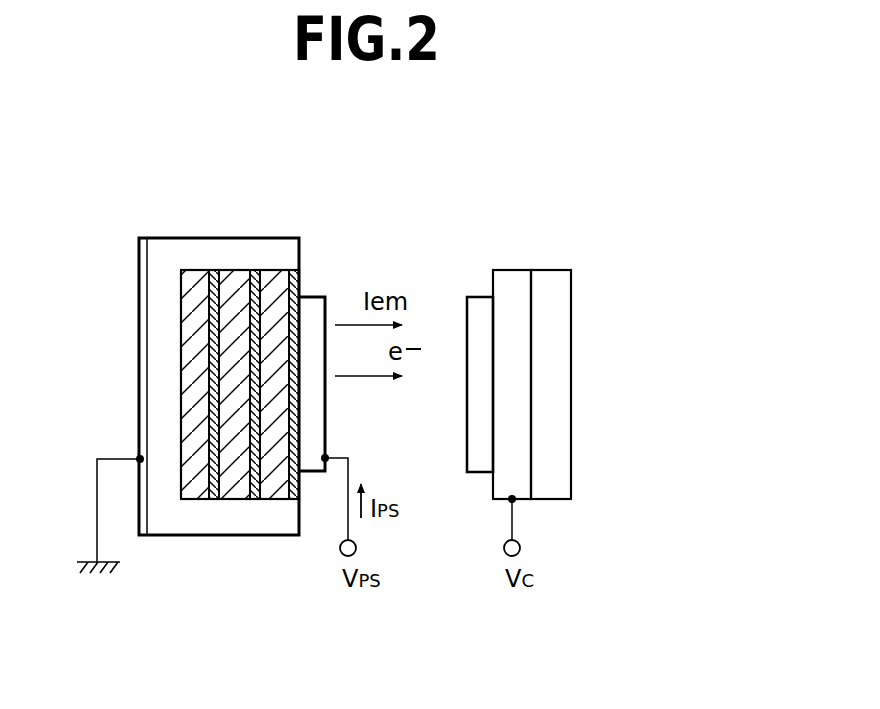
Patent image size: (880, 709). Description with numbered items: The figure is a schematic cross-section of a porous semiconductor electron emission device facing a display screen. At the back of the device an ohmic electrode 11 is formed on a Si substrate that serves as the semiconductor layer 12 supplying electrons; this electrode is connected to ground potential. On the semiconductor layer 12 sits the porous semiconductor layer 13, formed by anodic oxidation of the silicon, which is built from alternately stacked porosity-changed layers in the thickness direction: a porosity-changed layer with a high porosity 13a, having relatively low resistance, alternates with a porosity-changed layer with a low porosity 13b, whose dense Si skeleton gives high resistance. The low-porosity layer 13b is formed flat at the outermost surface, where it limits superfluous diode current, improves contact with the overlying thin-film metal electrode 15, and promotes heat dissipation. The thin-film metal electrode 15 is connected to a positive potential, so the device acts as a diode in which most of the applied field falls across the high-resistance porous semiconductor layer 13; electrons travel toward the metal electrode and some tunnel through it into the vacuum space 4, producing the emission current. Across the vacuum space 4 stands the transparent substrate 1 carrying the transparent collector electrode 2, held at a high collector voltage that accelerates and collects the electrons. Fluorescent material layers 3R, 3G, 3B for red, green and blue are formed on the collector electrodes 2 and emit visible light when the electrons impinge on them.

The transparent substrate 1 is at (550, 277).
The collector electrode 2 is at (510, 273).
The fluorescent material layer 3R is at (477, 298).
The fluorescent material layer 3G is at (477, 298).
The fluorescent material layer 3B is at (477, 298).
The vacuum space 4 is at (420, 438).
The ohmic electrode 11 is at (139, 293).
The semiconductor layer 12 is at (175, 238).
The porous semiconductor layer 13 is at (236, 262).
The porosity-changed layer with a high porosity 13a is at (197, 493).
The porosity-changed layer with a low porosity 13b is at (217, 493).
The thin-film metal electrode 15 is at (313, 305).